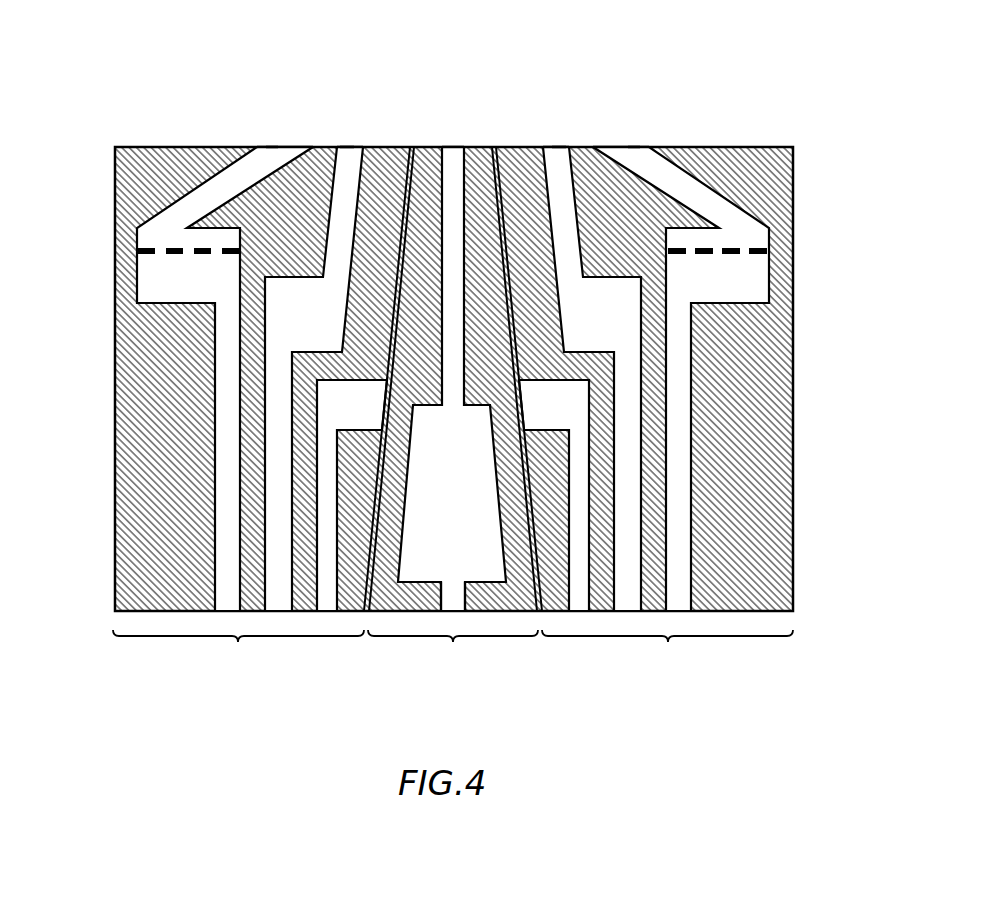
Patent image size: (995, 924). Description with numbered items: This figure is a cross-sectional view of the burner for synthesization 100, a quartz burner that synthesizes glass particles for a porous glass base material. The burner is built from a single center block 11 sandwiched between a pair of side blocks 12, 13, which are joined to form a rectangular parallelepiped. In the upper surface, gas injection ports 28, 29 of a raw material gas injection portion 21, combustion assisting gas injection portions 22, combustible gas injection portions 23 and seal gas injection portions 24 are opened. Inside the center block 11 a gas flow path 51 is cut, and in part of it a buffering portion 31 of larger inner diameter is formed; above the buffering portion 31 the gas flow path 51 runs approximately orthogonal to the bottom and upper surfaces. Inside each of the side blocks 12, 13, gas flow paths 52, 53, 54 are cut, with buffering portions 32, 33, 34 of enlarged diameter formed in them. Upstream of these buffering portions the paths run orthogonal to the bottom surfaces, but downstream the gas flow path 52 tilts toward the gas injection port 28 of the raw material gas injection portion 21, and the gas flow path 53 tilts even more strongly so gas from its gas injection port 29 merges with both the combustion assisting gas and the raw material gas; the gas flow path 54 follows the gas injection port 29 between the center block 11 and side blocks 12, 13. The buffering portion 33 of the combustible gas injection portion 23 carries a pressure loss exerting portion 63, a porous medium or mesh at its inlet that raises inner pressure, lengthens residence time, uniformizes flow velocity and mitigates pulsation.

The burner for synthesization 100 is at (103, 70).
The center block 11 is at (453, 654).
The side block 12 is at (238, 654).
The side block 13 is at (667, 654).
The raw material gas injection portion 21 is at (455, 118).
The combustion assisting gas injection portion 22 is at (353, 118).
The combustible gas injection portion 23 is at (287, 118).
The seal gas injection portion 24 is at (412, 118).
The gas injection port 28 is at (347, 148).
The gas injection port 29 is at (272, 148).
The buffering portion 31 is at (490, 513).
The buffering portion 32 is at (630, 320).
The buffering portion 33 is at (763, 285).
The buffering portion 34 is at (582, 405).
The gas flow path 51 is at (441, 600).
The gas flow path 52 is at (270, 378).
The gas flow path 53 is at (223, 323).
The gas flow path 54 is at (318, 463).
The pressure loss exerting portion 63 is at (775, 251).